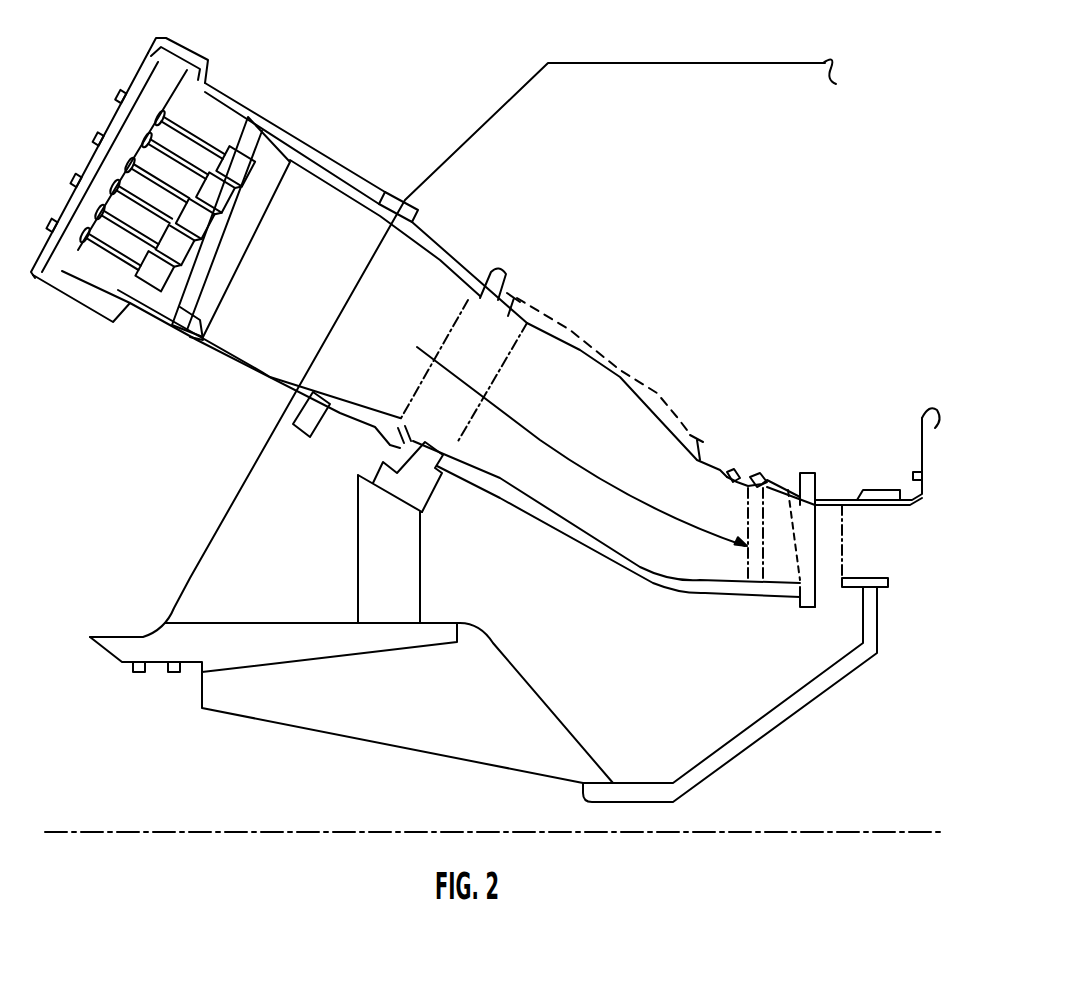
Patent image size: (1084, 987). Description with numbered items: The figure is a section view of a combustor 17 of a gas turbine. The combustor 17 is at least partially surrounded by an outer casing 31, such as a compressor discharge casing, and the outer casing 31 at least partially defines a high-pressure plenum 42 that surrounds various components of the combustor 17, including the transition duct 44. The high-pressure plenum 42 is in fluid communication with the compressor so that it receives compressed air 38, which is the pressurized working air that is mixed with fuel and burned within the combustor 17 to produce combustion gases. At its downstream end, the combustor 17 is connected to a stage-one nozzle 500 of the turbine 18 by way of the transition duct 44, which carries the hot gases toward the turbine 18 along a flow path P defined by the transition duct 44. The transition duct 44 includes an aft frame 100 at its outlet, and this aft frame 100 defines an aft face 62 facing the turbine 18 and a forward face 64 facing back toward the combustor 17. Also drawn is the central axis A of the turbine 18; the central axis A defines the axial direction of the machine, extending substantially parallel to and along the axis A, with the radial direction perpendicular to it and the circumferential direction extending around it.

The combustor 17 is at (232, 398).
The outer casing 31 is at (698, 63).
The high-pressure plenum 42 is at (773, 181).
The transition duct 44 is at (662, 330).
The compressed air 38 is at (710, 310).
The flow path P is at (547, 446).
The forward face 64 is at (793, 480).
The aft face 62 is at (818, 485).
The aft frame 100 is at (807, 608).
The stage-one nozzle 500 is at (853, 498).
The turbine section 18 is at (885, 559).
The central axis A is at (388, 833).